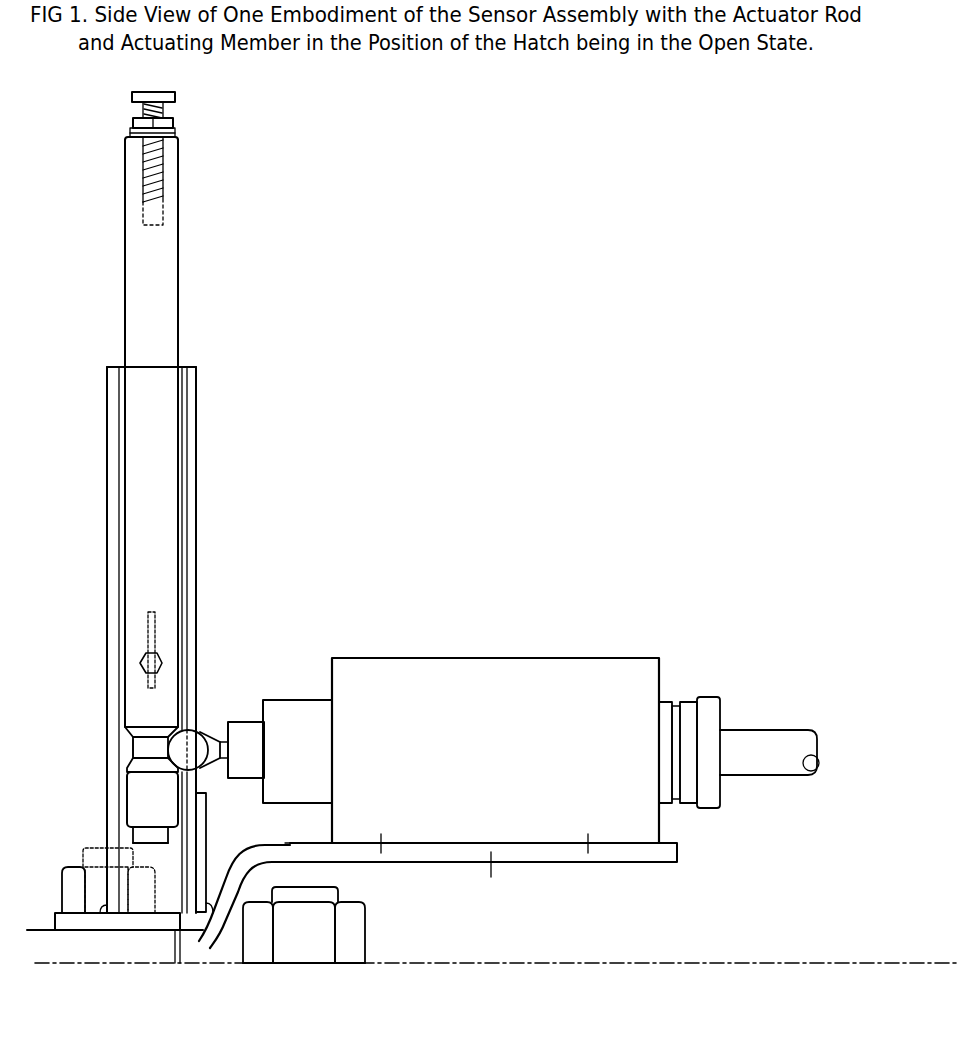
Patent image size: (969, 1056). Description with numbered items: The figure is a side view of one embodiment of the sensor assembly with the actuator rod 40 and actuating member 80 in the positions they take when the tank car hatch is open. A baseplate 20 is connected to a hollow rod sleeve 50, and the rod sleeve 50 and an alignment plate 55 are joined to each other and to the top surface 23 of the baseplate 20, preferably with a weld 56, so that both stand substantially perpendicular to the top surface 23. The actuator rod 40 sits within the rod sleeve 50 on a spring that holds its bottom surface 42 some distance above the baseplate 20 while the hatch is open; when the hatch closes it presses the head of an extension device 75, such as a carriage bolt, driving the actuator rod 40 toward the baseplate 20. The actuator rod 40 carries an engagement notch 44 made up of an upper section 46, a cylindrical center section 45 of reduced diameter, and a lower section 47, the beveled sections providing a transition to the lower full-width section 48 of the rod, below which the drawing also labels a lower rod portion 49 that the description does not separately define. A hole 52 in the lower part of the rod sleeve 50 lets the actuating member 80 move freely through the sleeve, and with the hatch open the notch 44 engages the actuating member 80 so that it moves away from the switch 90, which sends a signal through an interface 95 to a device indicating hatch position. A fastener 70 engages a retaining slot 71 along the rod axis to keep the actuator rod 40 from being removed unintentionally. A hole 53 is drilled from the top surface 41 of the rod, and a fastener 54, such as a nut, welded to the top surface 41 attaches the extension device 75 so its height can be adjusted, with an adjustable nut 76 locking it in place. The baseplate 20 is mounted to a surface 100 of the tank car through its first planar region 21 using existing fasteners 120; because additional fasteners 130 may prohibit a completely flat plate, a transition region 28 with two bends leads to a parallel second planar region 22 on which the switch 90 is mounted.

The baseplate 20 is at (677, 851).
The first planar region 21 is at (97, 918).
The second planar region 22 is at (492, 884).
The top surface 23 is at (242, 868).
The transition region 28 is at (238, 882).
The actuator rod 40 is at (168, 240).
The top surface 41 is at (130, 137).
The bottom surface 42 is at (145, 838).
The engagement notch 44 is at (125, 747).
The center section 45 is at (148, 749).
The upper section 46 is at (150, 731).
The lower section 47 is at (148, 767).
The lower full-width section 48 is at (145, 792).
The lower portion 49 is at (145, 834).
The rod sleeve 50 is at (190, 444).
The hole 52 is at (200, 768).
The hole 53 is at (162, 204).
The fastener 54 is at (157, 133).
The alignment plate 55 is at (210, 818).
The weld 56 is at (212, 892).
The fastener 70 is at (143, 664).
The retaining slot 71 is at (150, 627).
The extension device 75 is at (178, 99).
The adjustable nut 76 is at (176, 124).
The actuating member 80 is at (205, 733).
The switch 90 is at (487, 693).
The interface 95 is at (718, 698).
The surface 100 is at (41, 930).
The existing fasteners 120 is at (75, 880).
The additional fasteners 130 is at (307, 937).